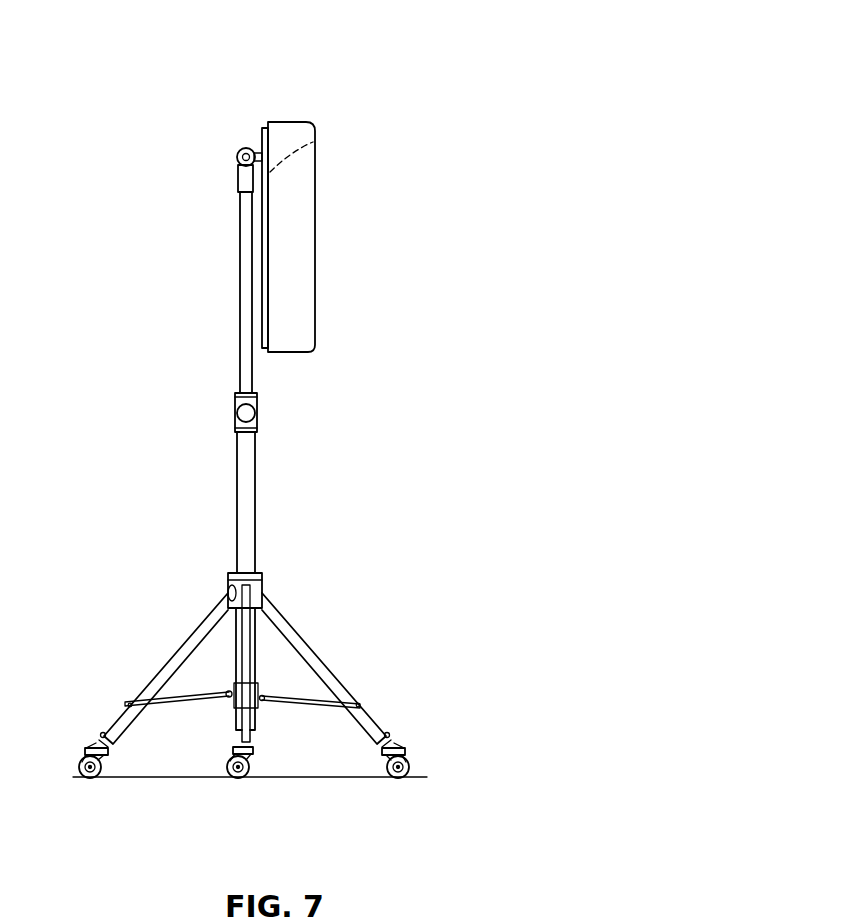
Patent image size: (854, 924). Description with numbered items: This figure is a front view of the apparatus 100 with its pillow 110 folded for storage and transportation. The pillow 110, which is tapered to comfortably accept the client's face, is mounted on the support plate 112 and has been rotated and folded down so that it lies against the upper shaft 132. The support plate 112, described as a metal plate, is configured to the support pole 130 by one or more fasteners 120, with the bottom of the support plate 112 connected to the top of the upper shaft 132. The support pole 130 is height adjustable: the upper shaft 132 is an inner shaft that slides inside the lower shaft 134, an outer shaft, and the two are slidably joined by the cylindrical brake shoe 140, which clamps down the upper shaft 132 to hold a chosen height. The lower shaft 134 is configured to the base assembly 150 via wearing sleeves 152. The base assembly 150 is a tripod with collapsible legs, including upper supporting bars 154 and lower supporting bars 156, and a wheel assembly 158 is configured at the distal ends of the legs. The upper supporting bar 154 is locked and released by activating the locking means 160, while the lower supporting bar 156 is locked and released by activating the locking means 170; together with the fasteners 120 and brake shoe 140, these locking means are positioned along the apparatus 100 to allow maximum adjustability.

The apparatus 100 is at (374, 56).
The pillow 110 is at (300, 240).
The support plate 112 is at (262, 132).
The fasteners 120 is at (238, 158).
The support pole 130 is at (282, 376).
The upper shaft 132 is at (247, 353).
The lower shaft 134 is at (245, 530).
The brake shoe 140 is at (243, 412).
The base assembly 150 is at (320, 607).
The wearing sleeves 152 is at (262, 577).
The upper supporting bars/legs 154 is at (180, 656).
The lower supporting bars/legs 156 is at (320, 707).
The wheel assembly 158 is at (92, 778).
The locking means 160 is at (230, 593).
The locking means 170 is at (229, 699).